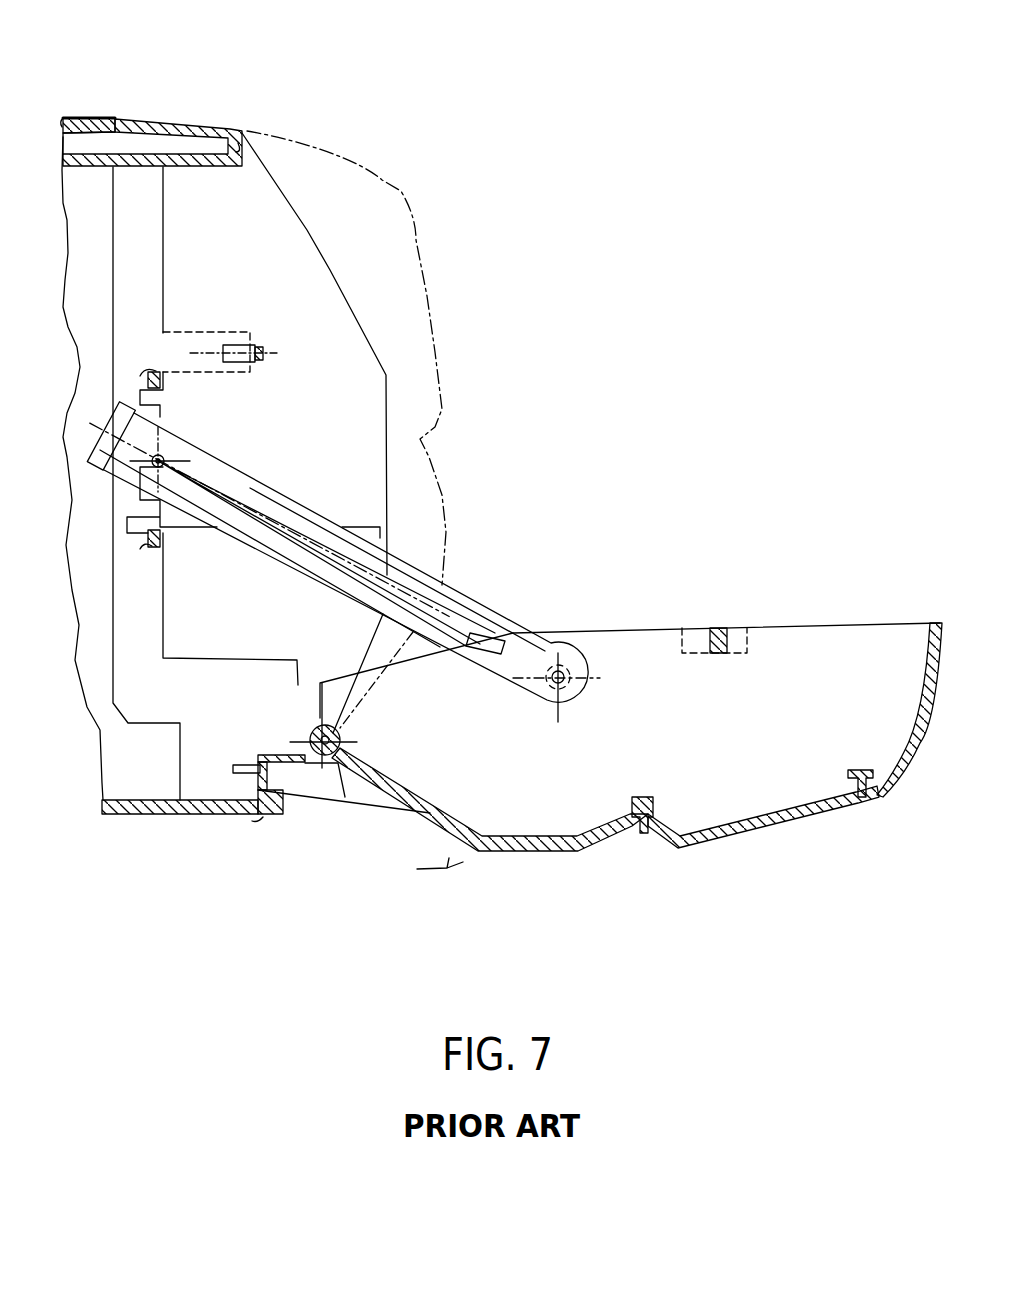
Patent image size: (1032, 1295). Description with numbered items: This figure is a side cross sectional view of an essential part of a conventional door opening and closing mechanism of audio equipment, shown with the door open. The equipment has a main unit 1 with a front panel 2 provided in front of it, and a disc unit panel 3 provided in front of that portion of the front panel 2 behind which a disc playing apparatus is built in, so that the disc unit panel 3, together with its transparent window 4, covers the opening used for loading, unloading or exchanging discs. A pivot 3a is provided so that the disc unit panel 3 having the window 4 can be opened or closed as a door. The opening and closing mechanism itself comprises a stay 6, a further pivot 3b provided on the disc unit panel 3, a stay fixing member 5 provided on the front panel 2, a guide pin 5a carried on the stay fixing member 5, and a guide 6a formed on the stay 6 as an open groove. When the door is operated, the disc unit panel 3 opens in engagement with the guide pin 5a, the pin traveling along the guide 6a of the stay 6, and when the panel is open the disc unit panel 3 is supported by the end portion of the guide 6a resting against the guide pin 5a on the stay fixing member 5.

The main unit 1 is at (88, 118).
The front panel 2 is at (183, 118).
The disc unit panel 3 is at (580, 850).
The pivot 3a is at (330, 755).
The pivot 3b is at (562, 670).
The transparent window 4 is at (777, 820).
The stay fixing member 5 is at (160, 418).
The guide pin 5a is at (165, 459).
The stay 6 is at (487, 607).
The guide 6a is at (233, 487).